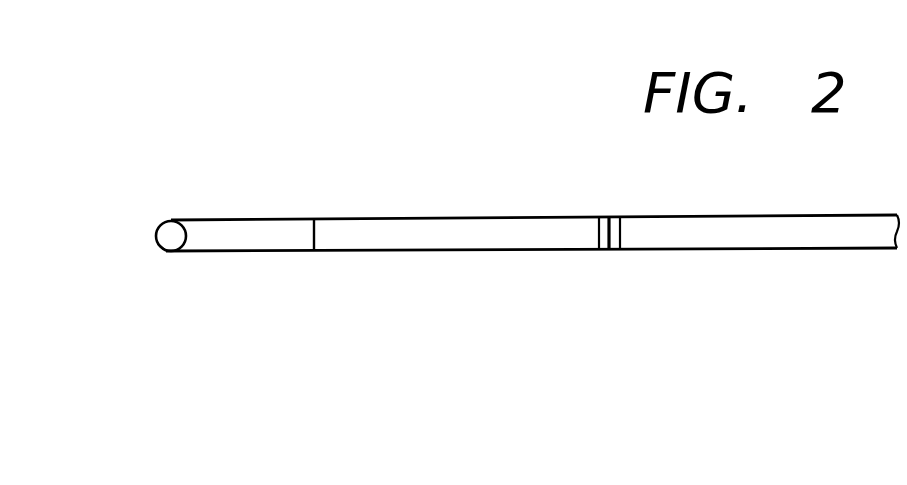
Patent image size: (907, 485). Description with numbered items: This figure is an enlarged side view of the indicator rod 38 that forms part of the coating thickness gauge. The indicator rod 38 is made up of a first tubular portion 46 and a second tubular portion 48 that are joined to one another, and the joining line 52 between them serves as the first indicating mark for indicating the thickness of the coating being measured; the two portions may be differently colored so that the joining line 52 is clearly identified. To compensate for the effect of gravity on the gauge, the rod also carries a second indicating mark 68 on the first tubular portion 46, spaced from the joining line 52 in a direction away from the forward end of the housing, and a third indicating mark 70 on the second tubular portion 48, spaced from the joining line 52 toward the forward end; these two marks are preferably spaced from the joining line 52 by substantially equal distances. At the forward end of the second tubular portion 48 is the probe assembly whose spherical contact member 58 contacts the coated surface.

The indicator rod 38 is at (780, 216).
The spherical contact member 58 is at (169, 236).
The second tubular portion 48 is at (468, 252).
The third indicating mark 70 is at (597, 218).
The joining line 52 is at (608, 252).
The second indicating mark 68 is at (625, 218).
The first tubular portion 46 is at (693, 249).